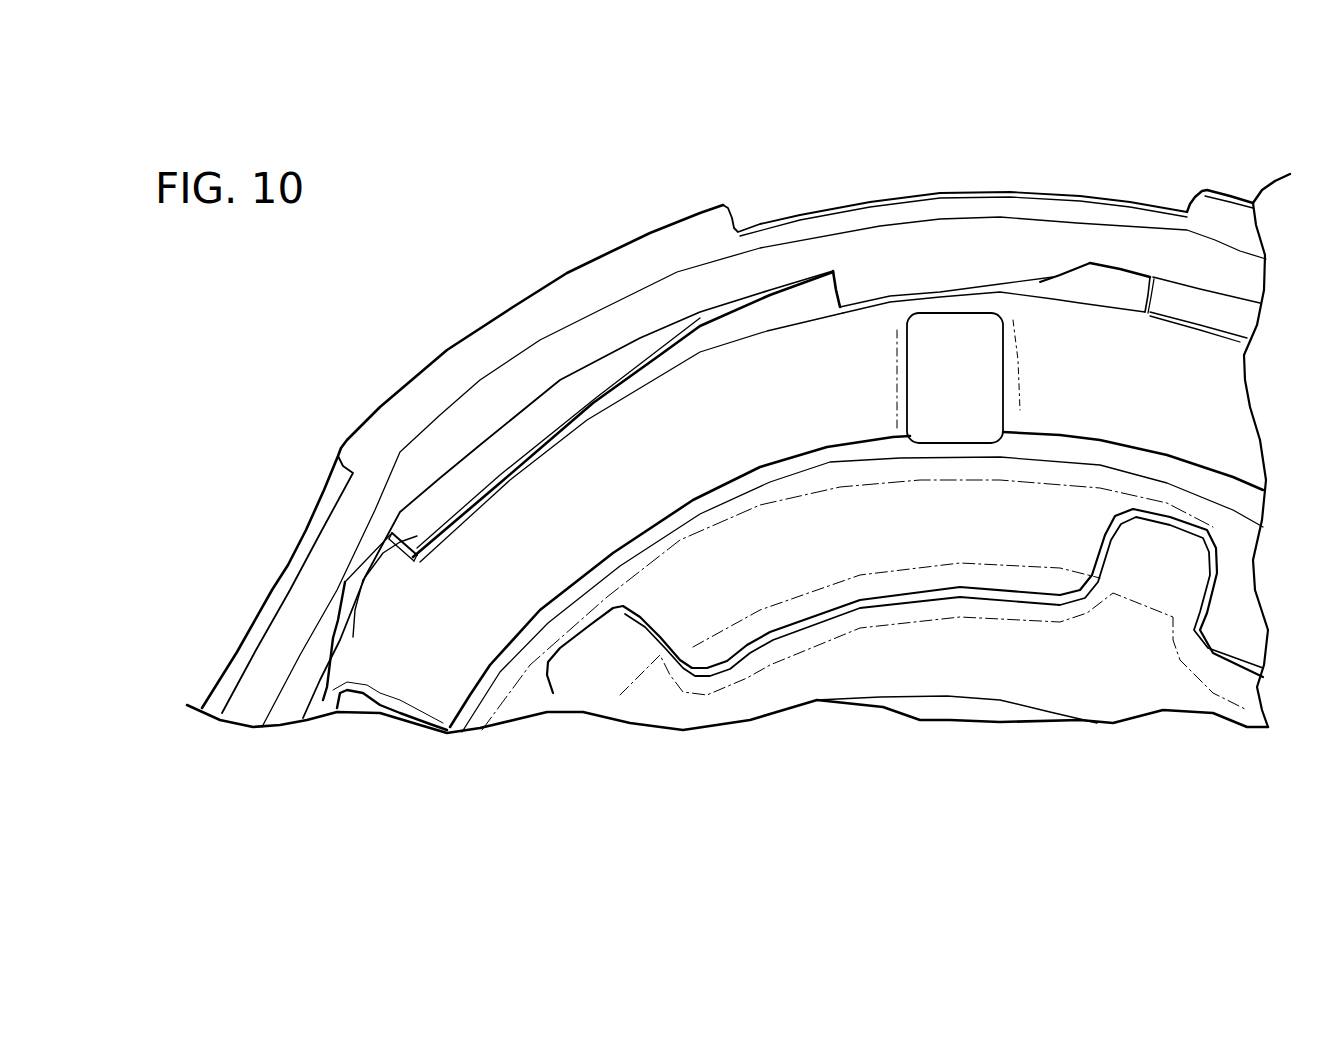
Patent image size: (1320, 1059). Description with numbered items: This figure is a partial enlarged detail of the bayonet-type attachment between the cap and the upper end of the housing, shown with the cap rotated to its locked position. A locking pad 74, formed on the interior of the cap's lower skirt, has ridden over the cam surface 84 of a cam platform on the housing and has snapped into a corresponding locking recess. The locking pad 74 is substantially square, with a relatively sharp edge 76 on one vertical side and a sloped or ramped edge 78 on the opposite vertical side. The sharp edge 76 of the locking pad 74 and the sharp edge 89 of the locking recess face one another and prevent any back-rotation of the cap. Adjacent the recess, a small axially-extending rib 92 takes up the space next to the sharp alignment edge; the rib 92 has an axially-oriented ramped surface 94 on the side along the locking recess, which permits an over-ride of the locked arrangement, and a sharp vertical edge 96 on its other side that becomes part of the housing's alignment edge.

The locking pad 74 is at (738, 425).
The sharp edge 76 is at (925, 215).
The ramped edge 78 is at (1009, 363).
The cam surface 84 is at (623, 366).
The sharp edge 89 is at (782, 326).
The rib 92 is at (1175, 203).
The ramped surface 94 is at (1073, 182).
The sharp vertical edge 96 is at (1203, 214).